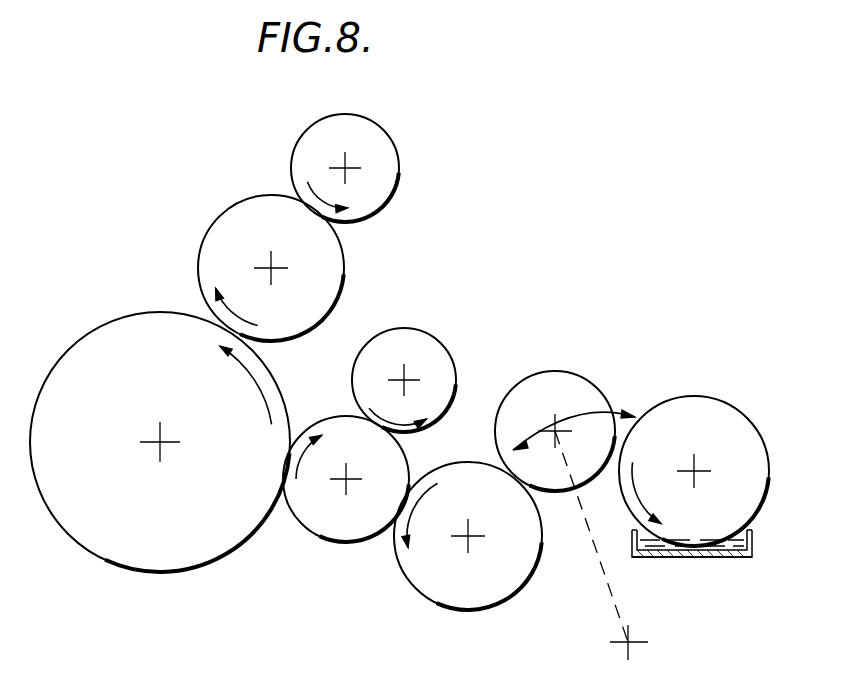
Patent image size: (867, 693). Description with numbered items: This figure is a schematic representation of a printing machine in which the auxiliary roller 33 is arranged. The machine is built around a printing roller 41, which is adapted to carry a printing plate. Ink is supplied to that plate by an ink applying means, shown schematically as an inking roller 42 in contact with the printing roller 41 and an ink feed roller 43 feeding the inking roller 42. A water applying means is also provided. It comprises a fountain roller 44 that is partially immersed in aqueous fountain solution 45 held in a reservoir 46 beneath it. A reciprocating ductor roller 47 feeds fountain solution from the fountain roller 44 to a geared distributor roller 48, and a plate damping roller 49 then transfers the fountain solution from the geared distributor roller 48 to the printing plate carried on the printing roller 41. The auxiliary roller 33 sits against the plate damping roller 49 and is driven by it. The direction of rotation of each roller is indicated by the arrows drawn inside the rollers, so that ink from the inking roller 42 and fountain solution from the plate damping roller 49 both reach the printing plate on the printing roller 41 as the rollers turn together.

The printing roller 41 is at (110, 324).
The inking roller 42 is at (237, 220).
The ink feed roller 43 is at (383, 163).
The auxiliary roller 33 is at (432, 353).
The plate damping roller 49 is at (327, 523).
The geared distributor roller 48 is at (495, 586).
The reciprocating ductor roller 47 is at (572, 338).
The fountain roller 44 is at (685, 370).
The aqueous fountain solution 45 is at (712, 548).
The reservoir 46 is at (750, 548).